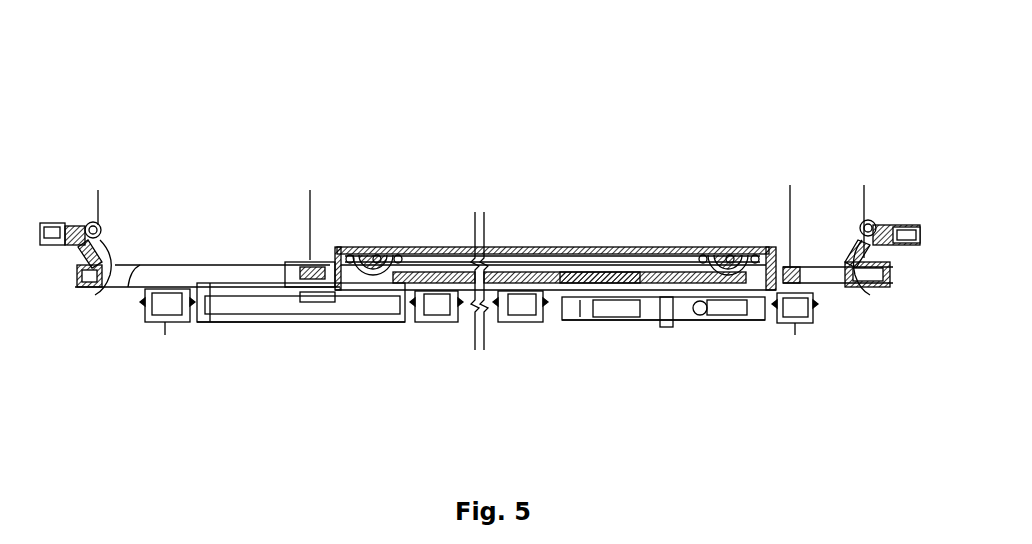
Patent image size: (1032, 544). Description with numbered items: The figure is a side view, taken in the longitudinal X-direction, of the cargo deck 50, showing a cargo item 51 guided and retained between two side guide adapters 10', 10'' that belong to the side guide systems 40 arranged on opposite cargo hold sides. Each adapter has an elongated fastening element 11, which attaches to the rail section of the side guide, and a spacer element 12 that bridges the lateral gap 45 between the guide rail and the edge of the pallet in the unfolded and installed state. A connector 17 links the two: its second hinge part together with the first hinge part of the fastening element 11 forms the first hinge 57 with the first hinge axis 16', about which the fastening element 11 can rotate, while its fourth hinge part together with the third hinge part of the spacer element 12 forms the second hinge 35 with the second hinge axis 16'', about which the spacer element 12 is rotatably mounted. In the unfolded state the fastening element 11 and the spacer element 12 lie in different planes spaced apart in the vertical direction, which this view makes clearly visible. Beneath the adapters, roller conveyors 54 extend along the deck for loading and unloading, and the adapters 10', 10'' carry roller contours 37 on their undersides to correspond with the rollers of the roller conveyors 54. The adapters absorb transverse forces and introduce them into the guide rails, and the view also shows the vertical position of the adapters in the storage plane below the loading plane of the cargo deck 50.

The side guide adapter of the first type 10' is at (669, 374).
The side guide adapter of the second type 10'' is at (284, 367).
The fastening element 11 is at (47, 223).
The spacer element 12 is at (340, 290).
The first hinge axis 16' is at (470, 170).
The second hinge axis 16'' is at (483, 315).
The connector 17 is at (85, 288).
The second hinge 35 is at (147, 261).
The roller contour 37 is at (178, 300).
The side guide system 40 is at (120, 148).
The lateral gap 45 is at (310, 190).
The cargo deck 50 is at (398, 150).
The cargo item 51 is at (533, 247).
The roller conveyor 54 is at (150, 325).
The first hinge 57 is at (110, 220).